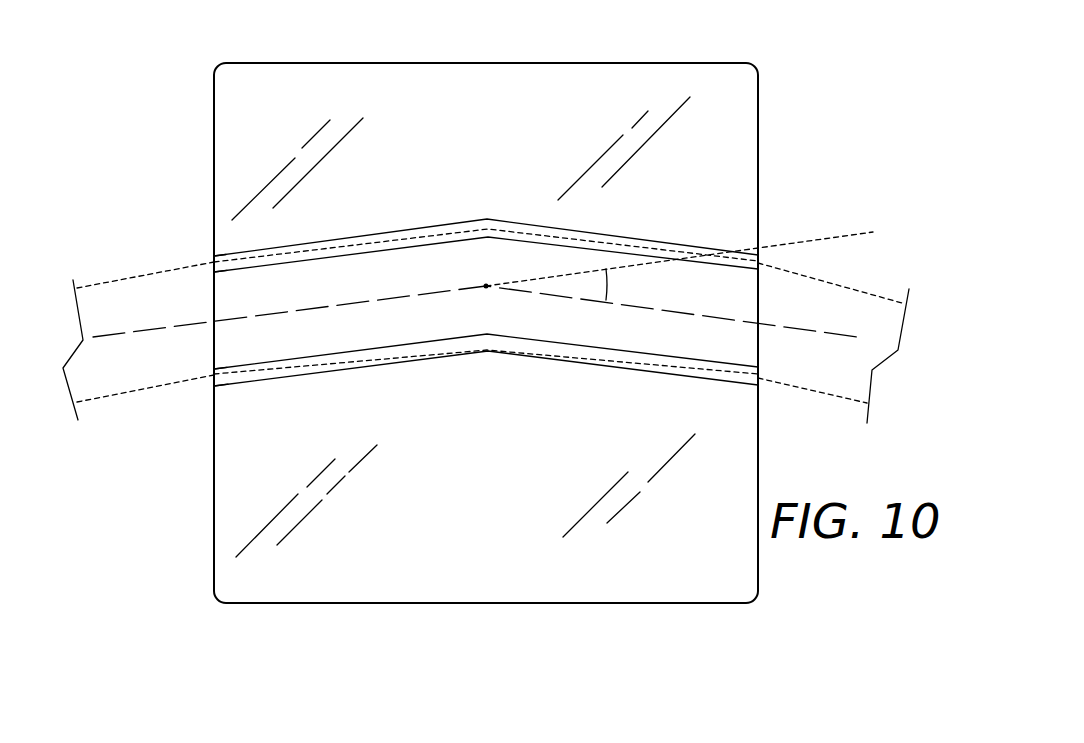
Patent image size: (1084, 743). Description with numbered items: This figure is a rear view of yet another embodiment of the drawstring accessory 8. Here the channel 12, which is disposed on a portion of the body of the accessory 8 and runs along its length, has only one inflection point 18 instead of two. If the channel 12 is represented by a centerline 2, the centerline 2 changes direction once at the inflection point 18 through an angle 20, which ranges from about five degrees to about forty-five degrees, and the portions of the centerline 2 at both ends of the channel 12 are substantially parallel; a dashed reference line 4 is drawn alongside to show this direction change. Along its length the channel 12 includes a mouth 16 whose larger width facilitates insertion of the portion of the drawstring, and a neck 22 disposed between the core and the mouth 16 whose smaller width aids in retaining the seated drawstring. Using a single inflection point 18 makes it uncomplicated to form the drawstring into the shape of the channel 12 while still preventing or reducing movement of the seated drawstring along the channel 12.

The centerline 2 is at (793, 329).
The reference line 4 is at (838, 284).
The accessory 8 is at (758, 110).
The channel 12 is at (757, 298).
The mouth 16 is at (303, 377).
The inflection point 18 is at (486, 286).
The angle 20 is at (608, 283).
The neck 22 is at (227, 271).